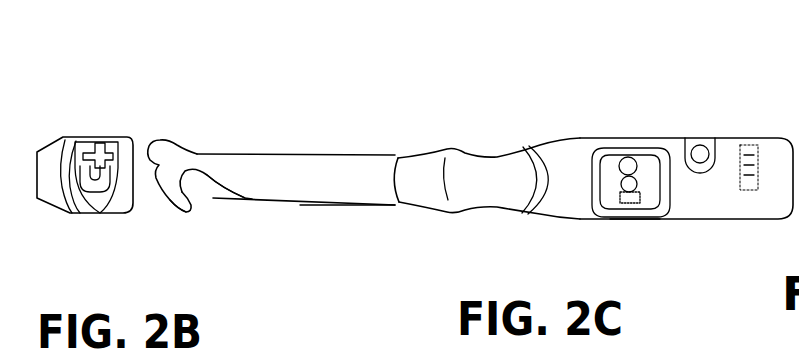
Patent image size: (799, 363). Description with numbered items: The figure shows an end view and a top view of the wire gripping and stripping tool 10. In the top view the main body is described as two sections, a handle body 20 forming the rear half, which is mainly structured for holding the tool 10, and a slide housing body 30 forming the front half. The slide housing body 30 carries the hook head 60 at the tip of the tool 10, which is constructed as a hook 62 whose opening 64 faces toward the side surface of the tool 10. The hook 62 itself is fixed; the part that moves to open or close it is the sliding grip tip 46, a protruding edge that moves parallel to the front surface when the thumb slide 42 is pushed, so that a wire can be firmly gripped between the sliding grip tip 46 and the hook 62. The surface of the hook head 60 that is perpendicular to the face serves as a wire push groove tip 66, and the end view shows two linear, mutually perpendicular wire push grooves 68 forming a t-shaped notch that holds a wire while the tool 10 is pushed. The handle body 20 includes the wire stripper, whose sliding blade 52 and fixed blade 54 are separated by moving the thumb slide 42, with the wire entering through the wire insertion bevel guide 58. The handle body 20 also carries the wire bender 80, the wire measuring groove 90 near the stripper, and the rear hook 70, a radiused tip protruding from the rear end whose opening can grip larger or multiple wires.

In FIG. 2C, the wire gripping and stripping tool 10 is at (534, 88).
In FIG. 2C, the handle body 20 is at (666, 128).
In FIG. 2B, the slide housing body 30 is at (329, 214).
In FIG. 2C, the thumb slide 42 is at (492, 152).
In FIG. 2B, the sliding grip tip 46 is at (218, 190).
In FIG. 2C, the sliding blade 52 is at (610, 194).
In FIG. 2C, the fixed blade 54 is at (648, 194).
In FIG. 2C, the wire insertion bevel guide 58 is at (605, 148).
In FIG. 2B, the hook head 60 is at (160, 205).
In FIG. 2C, the hook head 60 is at (631, 228).
In FIG. 2B, the hook 62 is at (198, 190).
In FIG. 2B, the opening 64 is at (207, 196).
In FIG. 2B, the wire push groove tip 66 is at (162, 138).
In FIG. 2B, the wire push groove 68 is at (98, 133).
In FIG. 2B, the rear hook 70 is at (52, 130).
In FIG. 2C, the wire bender 80 is at (704, 127).
In FIG. 2C, the wire measuring groove 90 is at (747, 127).